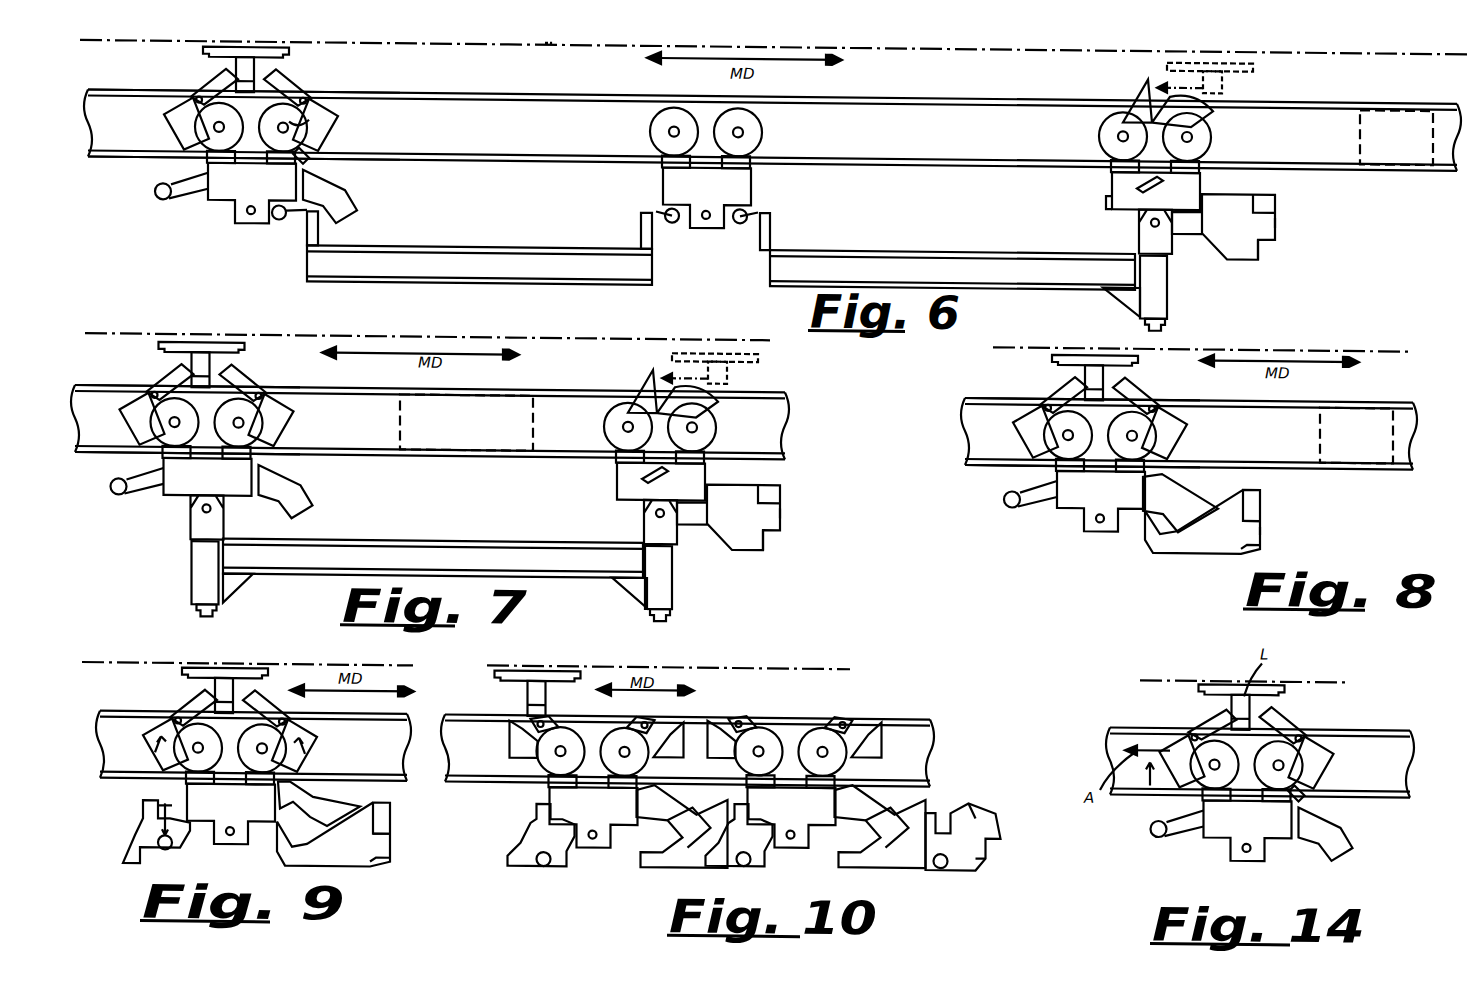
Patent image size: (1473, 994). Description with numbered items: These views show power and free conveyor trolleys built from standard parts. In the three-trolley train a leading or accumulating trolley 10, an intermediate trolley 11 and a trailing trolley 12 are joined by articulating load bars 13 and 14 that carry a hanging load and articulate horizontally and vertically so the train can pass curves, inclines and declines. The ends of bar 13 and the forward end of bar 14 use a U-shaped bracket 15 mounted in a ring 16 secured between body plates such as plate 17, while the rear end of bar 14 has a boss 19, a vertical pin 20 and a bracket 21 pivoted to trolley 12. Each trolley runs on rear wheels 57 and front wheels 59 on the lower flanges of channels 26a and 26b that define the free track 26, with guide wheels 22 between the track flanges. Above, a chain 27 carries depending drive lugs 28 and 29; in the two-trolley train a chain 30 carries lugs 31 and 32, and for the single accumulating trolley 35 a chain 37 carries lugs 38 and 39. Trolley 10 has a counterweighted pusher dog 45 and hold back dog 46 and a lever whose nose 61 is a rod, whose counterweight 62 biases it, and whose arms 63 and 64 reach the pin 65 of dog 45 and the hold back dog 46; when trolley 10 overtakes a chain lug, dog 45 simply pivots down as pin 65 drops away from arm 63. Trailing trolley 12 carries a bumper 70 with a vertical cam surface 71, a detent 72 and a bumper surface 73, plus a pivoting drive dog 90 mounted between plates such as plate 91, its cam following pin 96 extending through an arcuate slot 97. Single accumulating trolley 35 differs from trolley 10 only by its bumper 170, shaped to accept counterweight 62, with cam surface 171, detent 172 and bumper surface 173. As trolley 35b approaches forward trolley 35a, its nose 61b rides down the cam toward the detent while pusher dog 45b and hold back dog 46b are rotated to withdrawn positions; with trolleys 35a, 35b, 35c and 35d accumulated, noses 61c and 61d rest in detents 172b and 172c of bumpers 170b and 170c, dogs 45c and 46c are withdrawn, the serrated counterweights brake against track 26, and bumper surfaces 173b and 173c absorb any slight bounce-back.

In FIG. 6, the accumulating or leading trolley 10 is at (188, 255).
In FIG. 7, the accumulating or leading trolley 10 is at (127, 557).
In FIG. 14, the accumulating or leading trolley 10 is at (1162, 889).
In FIG. 6, the intermediate trolley 11 is at (616, 201).
In FIG. 6, the trailing trolley 12 is at (1087, 227).
In FIG. 7, the trailing trolley 12 is at (586, 517).
In FIG. 6, the articulating load bar 13 is at (498, 244).
In FIG. 6, the articulating load bar 14 is at (950, 245).
In FIG. 6, the U-shaped bracket 15 is at (298, 238).
In FIG. 6, the ring 16 is at (278, 226).
In FIG. 6, the plate 17 is at (252, 193).
In FIG. 7, the plate 17 is at (212, 487).
In FIG. 6, the boss 19 is at (1166, 280).
In FIG. 7, the boss 19 is at (672, 574).
In FIG. 6, the vertical pin 20 is at (1158, 318).
In FIG. 7, the vertical pin 20 is at (654, 621).
In FIG. 6, the bracket 21 is at (1170, 242).
In FIG. 7, the bracket 21 is at (668, 537).
In FIG. 6, the guide wheels 22 is at (205, 158).
In FIG. 7, the guide wheels 22 is at (178, 452).
In FIG. 8, the guide wheels 22 is at (1118, 470).
In FIG. 6, the free track 26 is at (1399, 86).
In FIG. 7, the free track 26 is at (461, 468).
In FIG. 8, the free track 26 is at (1384, 410).
In FIG. 6, the channel 26a is at (1396, 137).
In FIG. 7, the channel 26a is at (466, 422).
In FIG. 8, the channel 26a is at (1350, 468).
In FIG. 6, the channel 26b is at (122, 74).
In FIG. 7, the channel 26b is at (383, 445).
In FIG. 8, the channel 26b is at (1142, 433).
In FIG. 9, the channel 26b is at (412, 714).
In FIG. 10, the channel 26b is at (918, 716).
In FIG. 14, the channel 26b is at (1395, 730).
In FIG. 6, the chain 27 is at (551, 60).
In FIG. 6, the trolley drive lug 28 is at (256, 72).
In FIG. 6, the trolley drive lug 29 is at (1242, 68).
In FIG. 7, the chain 30 is at (458, 327).
In FIG. 7, the trolley drive lug 31 is at (200, 347).
In FIG. 7, the trolley drive lug 32 is at (716, 348).
In FIG. 8, the single accumulating trolley 35 is at (1023, 551).
In FIG. 9, the single accumulating trolley 35a is at (120, 878).
In FIG. 10, the single accumulating trolley 35a is at (521, 889).
In FIG. 9, the single accumulating trolley 35b is at (233, 858).
In FIG. 10, the single accumulating trolley 35b is at (618, 894).
In FIG. 10, the single accumulating trolley 35c is at (820, 870).
In FIG. 10, the single accumulating trolley 35d is at (999, 879).
In FIG. 8, the chain 37 is at (1290, 343).
In FIG. 9, the chain 37 is at (128, 660).
In FIG. 10, the chain 37 is at (808, 660).
In FIG. 8, the trolley drive lug 38 is at (1098, 370).
In FIG. 9, the trolley drive lug 38 is at (226, 680).
In FIG. 10, the trolley drive lug 39 is at (538, 672).
In FIG. 6, the pusher dog 45 is at (214, 85).
In FIG. 7, the pusher dog 45 is at (168, 377).
In FIG. 14, the pusher dog 45 is at (1215, 730).
In FIG. 9, the pusher dog 45b is at (176, 697).
In FIG. 10, the pusher dog 45b is at (560, 720).
In FIG. 10, the pusher dog 45c is at (760, 718).
In FIG. 6, the hold back dog 46 is at (340, 119).
In FIG. 7, the hold back dog 46 is at (298, 410).
In FIG. 9, the hold back dog 46b is at (338, 746).
In FIG. 10, the hold back dog 46b is at (648, 720).
In FIG. 10, the hold back dog 46c is at (856, 715).
In FIG. 6, the rear wheel 57 is at (298, 128).
In FIG. 6, the front wheel 59 is at (192, 124).
In FIG. 6, the nose 61 is at (162, 198).
In FIG. 9, the nose 61b is at (166, 852).
In FIG. 10, the nose 61b is at (545, 898).
In FIG. 10, the nose 61c is at (740, 860).
In FIG. 10, the nose 61d is at (945, 870).
In FIG. 6, the lever counterweight 62 is at (350, 205).
In FIG. 8, the lever counterweight 62 is at (1176, 492).
In FIG. 6, the dog engaging arm 63 is at (282, 86).
In FIG. 14, the dog engaging arm 63 is at (1272, 722).
In FIG. 6, the dog engaging arm 64 is at (300, 160).
In FIG. 14, the dog engaging arm 64 is at (1305, 790).
In FIG. 14, the pin 65 is at (1248, 798).
In FIG. 6, the bumper 70 is at (1242, 244).
In FIG. 7, the bumper 70 is at (745, 542).
In FIG. 6, the vertical cam surface 71 is at (1276, 212).
In FIG. 7, the vertical cam surface 71 is at (781, 510).
In FIG. 6, the detent 72 is at (1262, 234).
In FIG. 7, the detent 72 is at (768, 530).
In FIG. 6, the bumper surface 73 is at (1275, 186).
In FIG. 7, the bumper surface 73 is at (781, 486).
In FIG. 6, the drive dog 90 is at (1185, 100).
In FIG. 6, the plate 91 is at (1123, 205).
In FIG. 6, the cam following pin 96 is at (1114, 188).
In FIG. 6, the arcuate slot 97 is at (1162, 176).
In FIG. 8, the bumper 170 is at (1216, 546).
In FIG. 9, the bumper 170b is at (312, 850).
In FIG. 10, the bumper 170b is at (688, 852).
In FIG. 10, the bumper 170c is at (908, 856).
In FIG. 8, the vertical cam surface 171 is at (1262, 516).
In FIG. 8, the detent 172 is at (1250, 542).
In FIG. 9, the detent 172b is at (378, 848).
In FIG. 10, the detent 172c is at (930, 900).
In FIG. 8, the bumper surface 173 is at (1262, 496).
In FIG. 9, the bumper surface 173b is at (390, 814).
In FIG. 10, the bumper surface 173c is at (962, 800).